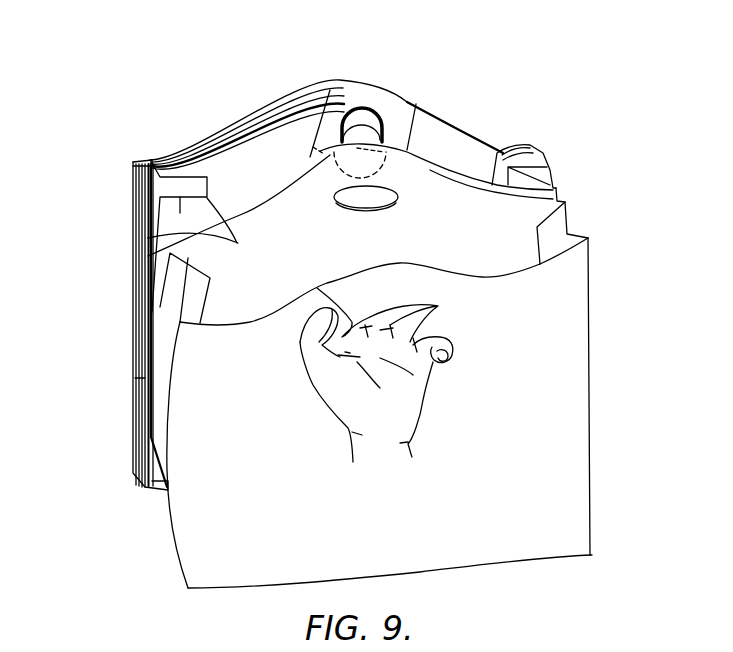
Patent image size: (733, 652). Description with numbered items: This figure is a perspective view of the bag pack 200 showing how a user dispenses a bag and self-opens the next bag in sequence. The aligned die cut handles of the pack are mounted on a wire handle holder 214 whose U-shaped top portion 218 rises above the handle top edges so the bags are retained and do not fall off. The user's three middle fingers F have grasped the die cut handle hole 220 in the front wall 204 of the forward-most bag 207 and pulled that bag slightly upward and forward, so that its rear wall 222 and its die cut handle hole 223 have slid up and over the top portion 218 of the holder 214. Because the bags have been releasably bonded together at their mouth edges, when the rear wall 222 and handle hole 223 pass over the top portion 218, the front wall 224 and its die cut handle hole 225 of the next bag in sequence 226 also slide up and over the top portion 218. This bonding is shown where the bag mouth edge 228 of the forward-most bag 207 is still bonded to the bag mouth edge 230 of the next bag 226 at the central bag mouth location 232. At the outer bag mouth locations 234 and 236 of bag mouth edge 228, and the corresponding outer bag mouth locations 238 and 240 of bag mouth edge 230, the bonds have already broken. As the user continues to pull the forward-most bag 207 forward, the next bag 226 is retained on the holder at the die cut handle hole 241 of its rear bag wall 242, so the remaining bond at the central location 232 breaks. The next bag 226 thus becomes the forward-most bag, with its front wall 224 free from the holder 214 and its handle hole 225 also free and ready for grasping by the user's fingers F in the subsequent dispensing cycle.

The bag pack 200 is at (134, 280).
The front wall 204 is at (520, 435).
The forward-most bag 207 is at (596, 459).
The wire handle holder 214 is at (416, 104).
The U-shaped top portion 218 is at (359, 108).
The die cut handle hole 220 is at (330, 277).
The rear wall 222 is at (148, 238).
The die cut handle hole 223 is at (337, 211).
The front wall 224 is at (183, 214).
The die cut handle hole 225 is at (384, 214).
The next bag in sequence 226 is at (552, 167).
The bag mouth edge 228 is at (207, 198).
The bag mouth edge 230 is at (252, 122).
The central bag mouth location 232 is at (330, 90).
The outer bag mouth location 234 is at (147, 316).
The outer bag mouth location 236 is at (557, 191).
The outer bag mouth location 238 is at (147, 165).
The outer bag mouth location 240 is at (502, 150).
The die cut handle hole 241 is at (393, 120).
The rear bag wall 242 is at (297, 134).
The user's three middle fingers F is at (380, 375).